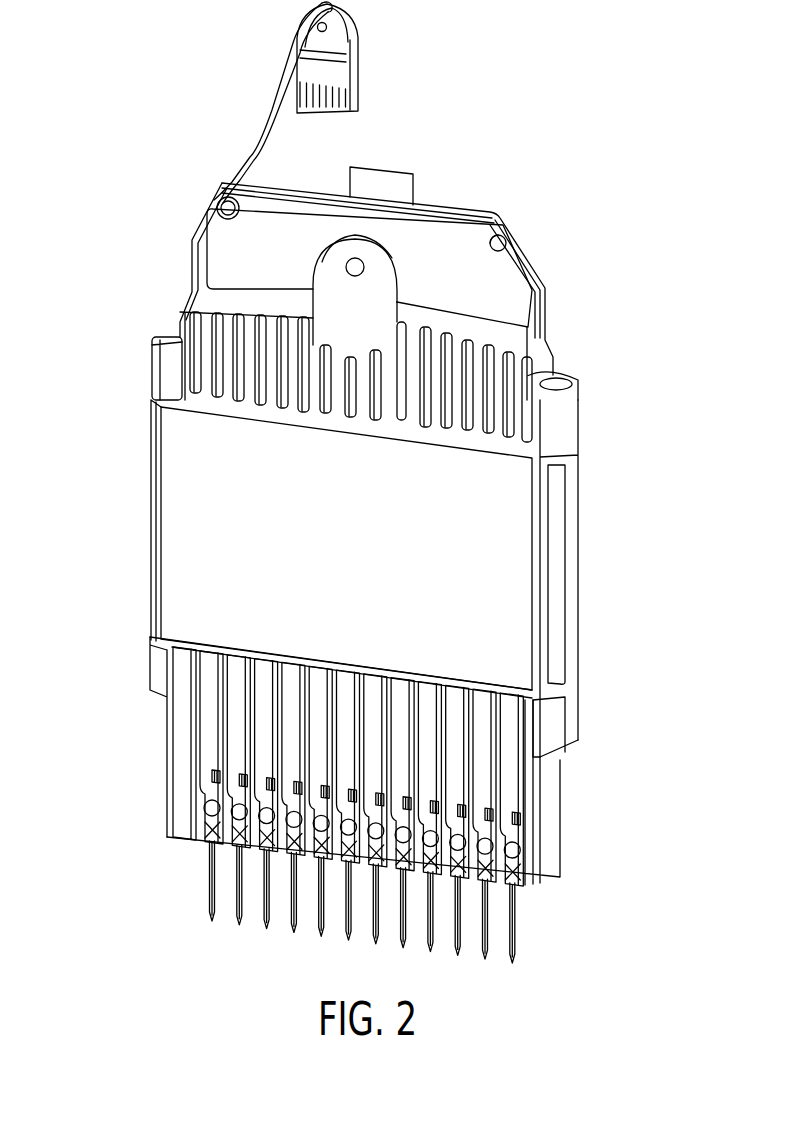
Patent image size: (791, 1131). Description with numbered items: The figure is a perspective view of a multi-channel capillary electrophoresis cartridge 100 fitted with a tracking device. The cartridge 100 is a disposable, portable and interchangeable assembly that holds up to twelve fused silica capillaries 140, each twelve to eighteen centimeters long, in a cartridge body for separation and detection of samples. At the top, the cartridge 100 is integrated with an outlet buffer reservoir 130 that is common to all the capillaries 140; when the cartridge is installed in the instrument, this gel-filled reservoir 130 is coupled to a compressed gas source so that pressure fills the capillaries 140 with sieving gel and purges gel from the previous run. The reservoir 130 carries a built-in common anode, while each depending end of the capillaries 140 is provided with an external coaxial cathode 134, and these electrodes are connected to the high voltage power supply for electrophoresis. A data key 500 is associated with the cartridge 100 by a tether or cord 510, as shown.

The cartridge 100 is at (632, 400).
The outlet buffer reservoir 130 is at (158, 311).
The external coaxial cathode 134 is at (515, 920).
The capillaries 140 is at (515, 956).
The data key 500 is at (352, 70).
The tether or cord 510 is at (268, 112).